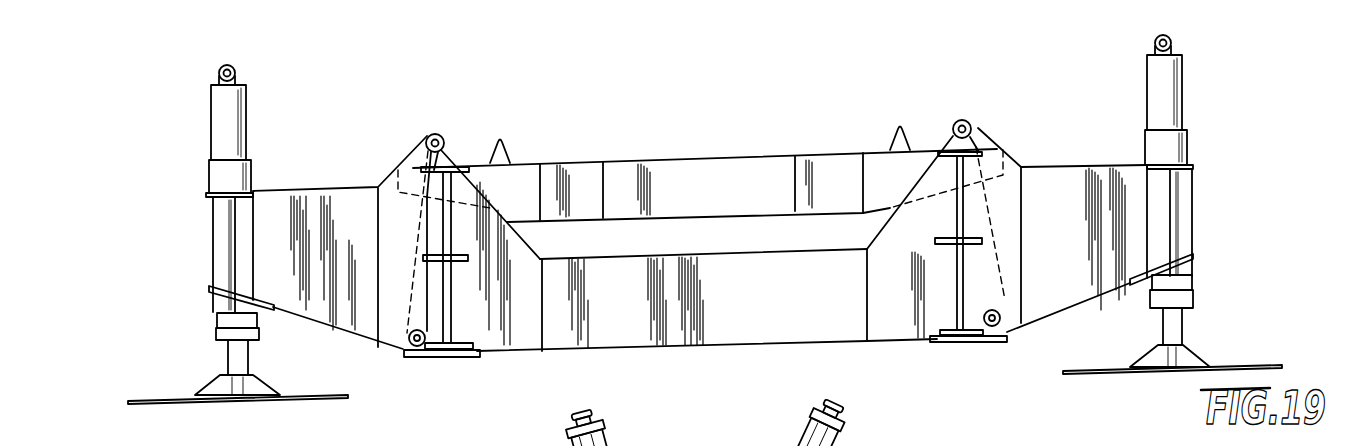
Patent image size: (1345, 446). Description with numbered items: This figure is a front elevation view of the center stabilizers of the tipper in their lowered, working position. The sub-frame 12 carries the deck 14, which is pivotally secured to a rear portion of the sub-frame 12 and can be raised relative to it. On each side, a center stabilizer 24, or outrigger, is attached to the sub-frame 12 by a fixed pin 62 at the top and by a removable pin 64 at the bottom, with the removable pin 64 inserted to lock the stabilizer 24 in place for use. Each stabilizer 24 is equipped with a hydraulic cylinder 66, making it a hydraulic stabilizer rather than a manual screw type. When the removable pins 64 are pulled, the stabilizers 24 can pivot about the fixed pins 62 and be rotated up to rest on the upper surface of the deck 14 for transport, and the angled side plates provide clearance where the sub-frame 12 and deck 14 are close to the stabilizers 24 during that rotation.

The sub-frame 12 is at (738, 232).
The deck 14 is at (673, 133).
The center stabilizer 24 is at (212, 233).
The fixed pin 62 is at (431, 137).
The removable pin 64 is at (418, 348).
The hydraulic cylinder 66 is at (224, 127).